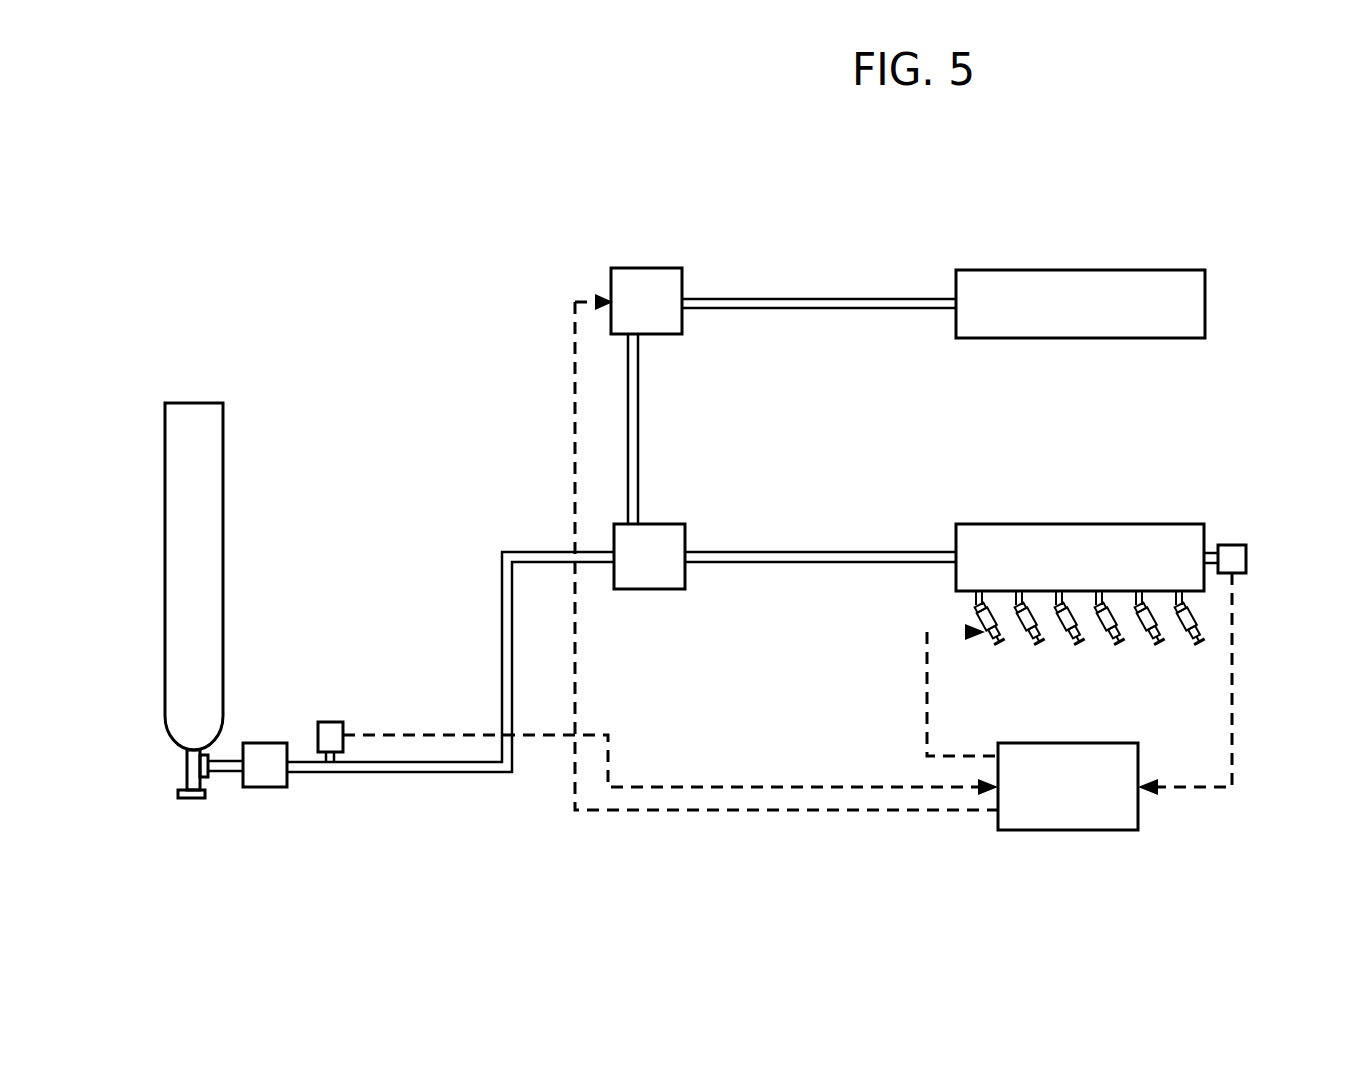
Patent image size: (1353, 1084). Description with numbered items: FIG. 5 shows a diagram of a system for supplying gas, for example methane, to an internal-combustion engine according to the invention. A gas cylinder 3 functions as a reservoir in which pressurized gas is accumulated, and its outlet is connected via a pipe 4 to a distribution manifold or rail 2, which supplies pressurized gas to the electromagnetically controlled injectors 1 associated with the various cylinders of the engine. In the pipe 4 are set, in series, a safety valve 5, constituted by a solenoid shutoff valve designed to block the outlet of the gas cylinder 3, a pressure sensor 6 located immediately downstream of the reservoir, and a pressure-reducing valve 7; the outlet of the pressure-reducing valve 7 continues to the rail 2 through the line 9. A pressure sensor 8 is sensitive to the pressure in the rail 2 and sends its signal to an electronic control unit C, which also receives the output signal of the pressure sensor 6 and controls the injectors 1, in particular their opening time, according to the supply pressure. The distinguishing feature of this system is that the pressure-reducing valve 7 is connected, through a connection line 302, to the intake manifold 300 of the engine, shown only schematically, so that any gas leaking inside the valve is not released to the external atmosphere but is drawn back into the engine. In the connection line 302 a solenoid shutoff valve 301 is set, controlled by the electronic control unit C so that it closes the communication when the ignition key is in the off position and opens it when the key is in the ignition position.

The injectors 1 is at (1004, 652).
The distribution manifold or rail 2 is at (1060, 538).
The gas cylinder 3 is at (213, 525).
The pipe 4 is at (485, 600).
The safety valve 5 is at (267, 778).
The pressure sensor 6 is at (332, 728).
The pressure-reducing valve 7 is at (653, 545).
The pressure sensor 8 is at (1248, 548).
The high-pressure line 9 is at (786, 553).
The intake manifold 300 is at (990, 270).
The solenoid shutoff valve 301 is at (668, 268).
The connection line 302 is at (788, 298).
The electronic control unit C is at (1114, 822).